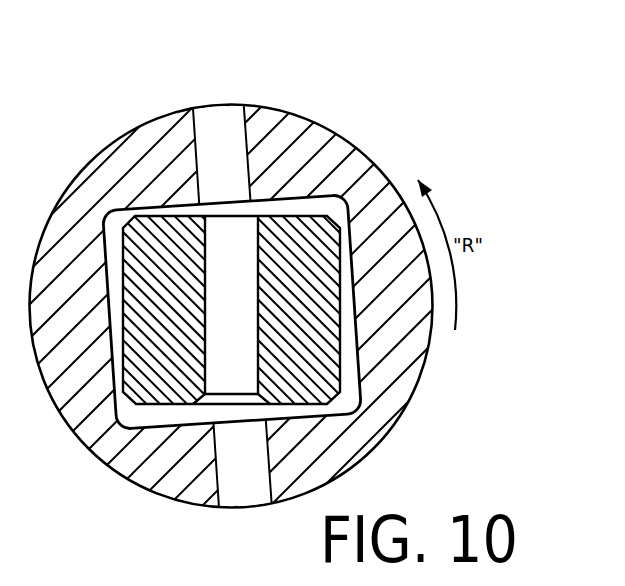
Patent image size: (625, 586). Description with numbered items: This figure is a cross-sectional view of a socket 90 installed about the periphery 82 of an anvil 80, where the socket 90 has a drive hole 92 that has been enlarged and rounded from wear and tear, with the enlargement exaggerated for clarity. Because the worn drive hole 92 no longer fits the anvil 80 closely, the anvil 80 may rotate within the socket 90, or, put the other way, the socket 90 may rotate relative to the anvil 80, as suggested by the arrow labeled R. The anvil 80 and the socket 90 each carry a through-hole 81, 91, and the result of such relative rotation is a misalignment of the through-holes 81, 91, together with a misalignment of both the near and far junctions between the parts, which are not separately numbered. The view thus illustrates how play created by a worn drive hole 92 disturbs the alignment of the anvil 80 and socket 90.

The anvil 80 is at (311, 218).
The through-hole 81 is at (217, 263).
The periphery 82 is at (139, 213).
The socket 90 is at (377, 168).
The through-hole 91 is at (233, 127).
The drive hole 92 is at (111, 211).